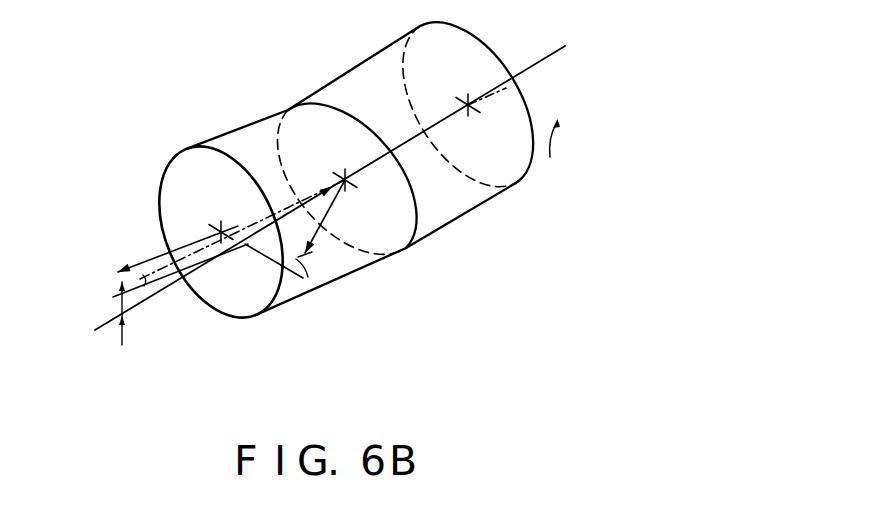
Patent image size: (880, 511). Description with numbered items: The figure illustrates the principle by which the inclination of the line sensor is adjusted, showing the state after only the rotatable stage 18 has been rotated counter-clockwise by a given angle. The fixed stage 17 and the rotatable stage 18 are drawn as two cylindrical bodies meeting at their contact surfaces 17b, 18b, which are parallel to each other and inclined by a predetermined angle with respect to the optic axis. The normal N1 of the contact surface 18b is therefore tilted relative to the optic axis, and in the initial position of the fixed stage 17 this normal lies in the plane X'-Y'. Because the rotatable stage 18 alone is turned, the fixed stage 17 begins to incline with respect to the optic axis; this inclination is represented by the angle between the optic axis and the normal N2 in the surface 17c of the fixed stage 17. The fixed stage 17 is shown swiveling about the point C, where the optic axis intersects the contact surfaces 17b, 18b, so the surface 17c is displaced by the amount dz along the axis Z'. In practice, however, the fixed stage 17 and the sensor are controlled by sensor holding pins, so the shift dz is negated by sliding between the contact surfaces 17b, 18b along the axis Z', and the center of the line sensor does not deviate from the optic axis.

The fixed stage 17 is at (251, 146).
The surface of the fixed stage 17c is at (188, 170).
The contact surface of the fixed stage 17b is at (423, 207).
The rotatable stage 18 is at (373, 80).
The contact surface of the rotatable stage 18b is at (423, 207).
The point C is at (344, 178).
The normal of the contact surface 18b N1 is at (330, 212).
The normal in the surface 17c N2 is at (155, 258).
The amount of shift dz is at (120, 332).